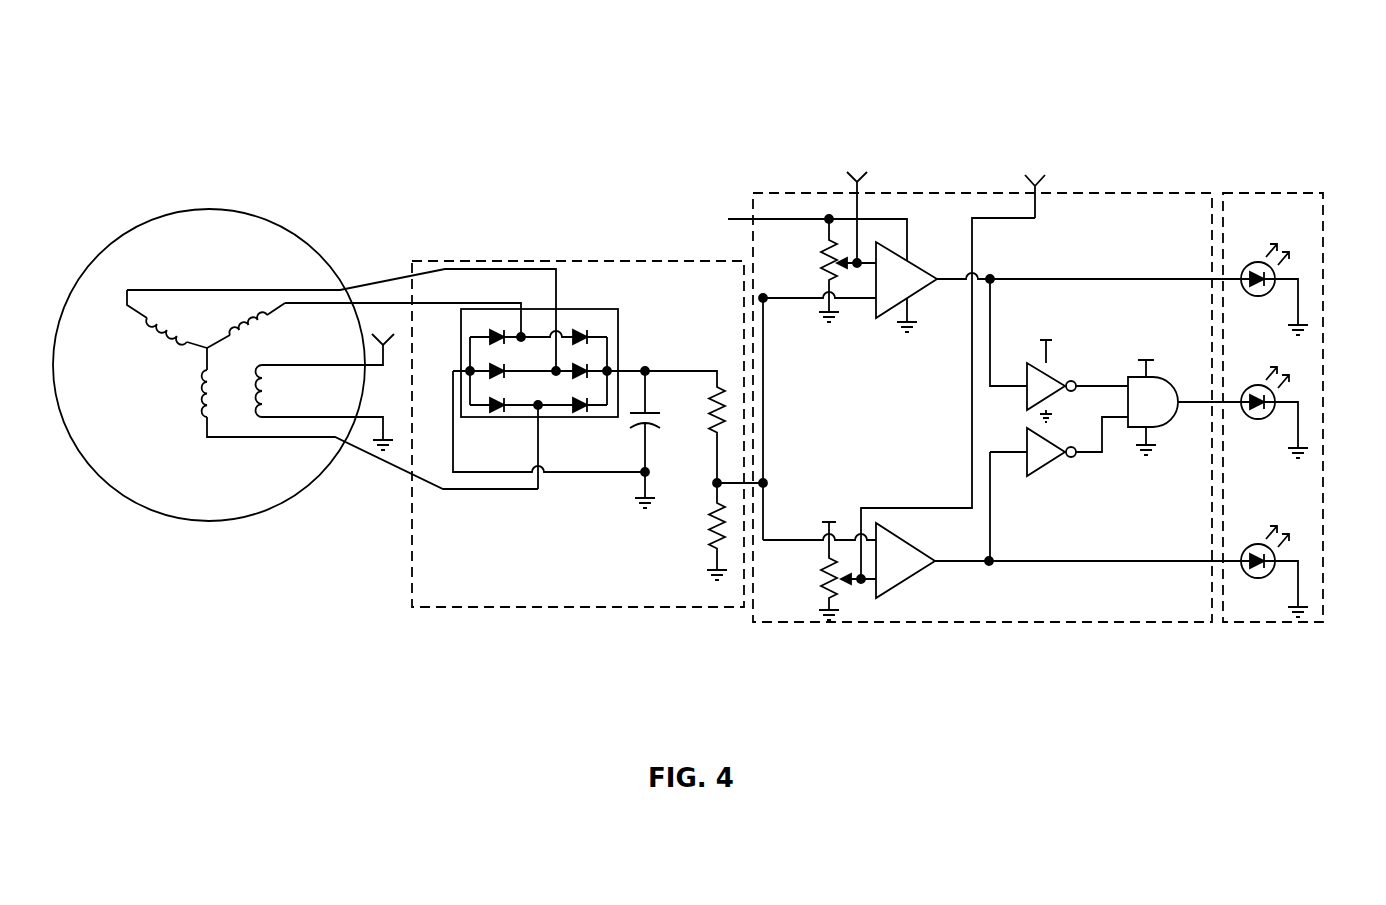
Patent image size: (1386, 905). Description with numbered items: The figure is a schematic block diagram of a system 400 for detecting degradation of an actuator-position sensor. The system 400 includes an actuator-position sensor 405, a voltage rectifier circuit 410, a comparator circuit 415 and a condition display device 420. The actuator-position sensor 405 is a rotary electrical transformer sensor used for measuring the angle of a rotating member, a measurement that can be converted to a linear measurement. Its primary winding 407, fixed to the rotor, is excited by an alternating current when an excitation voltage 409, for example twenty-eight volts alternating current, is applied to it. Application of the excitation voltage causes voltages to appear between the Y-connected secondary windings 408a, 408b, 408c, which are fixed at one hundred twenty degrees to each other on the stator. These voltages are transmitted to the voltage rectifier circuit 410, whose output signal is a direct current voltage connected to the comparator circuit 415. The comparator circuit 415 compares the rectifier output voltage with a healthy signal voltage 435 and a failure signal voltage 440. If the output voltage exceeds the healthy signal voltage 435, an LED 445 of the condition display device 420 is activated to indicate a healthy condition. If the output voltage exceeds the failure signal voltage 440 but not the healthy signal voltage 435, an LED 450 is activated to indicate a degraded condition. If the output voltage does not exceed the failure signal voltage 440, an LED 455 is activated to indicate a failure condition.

The system 400 is at (203, 116).
The actuator-position sensor 405 is at (286, 367).
The primary winding 407 is at (255, 392).
The secondary winding 408a is at (163, 332).
The secondary winding 408b is at (238, 307).
The secondary winding 408c is at (197, 388).
The excitation voltage 409 is at (386, 330).
The voltage rectifier circuit 410 is at (582, 260).
The comparator circuit 415 is at (957, 380).
The condition display device 420 is at (1304, 395).
The healthy signal voltage 435 is at (857, 171).
The failure signal voltage 440 is at (1035, 174).
The LED 445 is at (1290, 270).
The LED 450 is at (1287, 390).
The LED 455 is at (1295, 550).